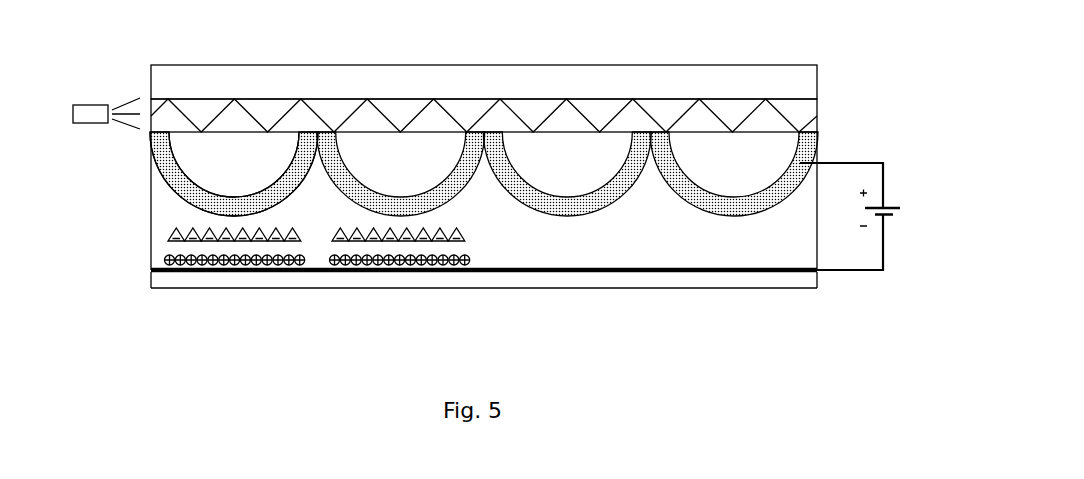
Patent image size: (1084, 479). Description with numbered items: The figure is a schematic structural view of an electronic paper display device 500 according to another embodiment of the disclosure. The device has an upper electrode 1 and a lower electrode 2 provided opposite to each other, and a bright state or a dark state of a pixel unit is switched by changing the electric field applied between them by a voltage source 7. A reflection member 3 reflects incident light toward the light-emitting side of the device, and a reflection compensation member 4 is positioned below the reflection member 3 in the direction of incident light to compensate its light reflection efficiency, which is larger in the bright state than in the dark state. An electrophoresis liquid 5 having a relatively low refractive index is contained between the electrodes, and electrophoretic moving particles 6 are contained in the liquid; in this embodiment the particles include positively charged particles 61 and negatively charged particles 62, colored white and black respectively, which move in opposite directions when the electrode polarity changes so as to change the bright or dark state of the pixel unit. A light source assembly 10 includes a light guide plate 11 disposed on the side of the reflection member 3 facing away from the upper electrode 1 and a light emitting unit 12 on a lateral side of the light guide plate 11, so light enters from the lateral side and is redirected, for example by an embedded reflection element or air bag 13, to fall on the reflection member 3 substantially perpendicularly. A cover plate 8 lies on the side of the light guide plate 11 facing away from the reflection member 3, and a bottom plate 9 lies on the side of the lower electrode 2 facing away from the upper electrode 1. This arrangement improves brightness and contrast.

The electronic paper display device 500 is at (165, 45).
The upper electrode 1 is at (813, 142).
The lower electrode 2 is at (798, 278).
The reflection member 3 is at (185, 147).
The reflection compensation member 4 is at (170, 188).
The electrophoresis liquid 5 is at (667, 247).
The electrophoretic moving particles 6 is at (385, 266).
The positively charged particles 61 is at (200, 275).
The negatively charged particles 62 is at (168, 238).
The voltage source 7 is at (898, 216).
The cover plate 8 is at (737, 75).
The bottom plate 9 is at (762, 275).
The light source assembly 10 is at (128, 89).
The light guide plate 11 is at (817, 110).
The light emitting unit 12 is at (98, 110).
The air bag 13 is at (383, 112).